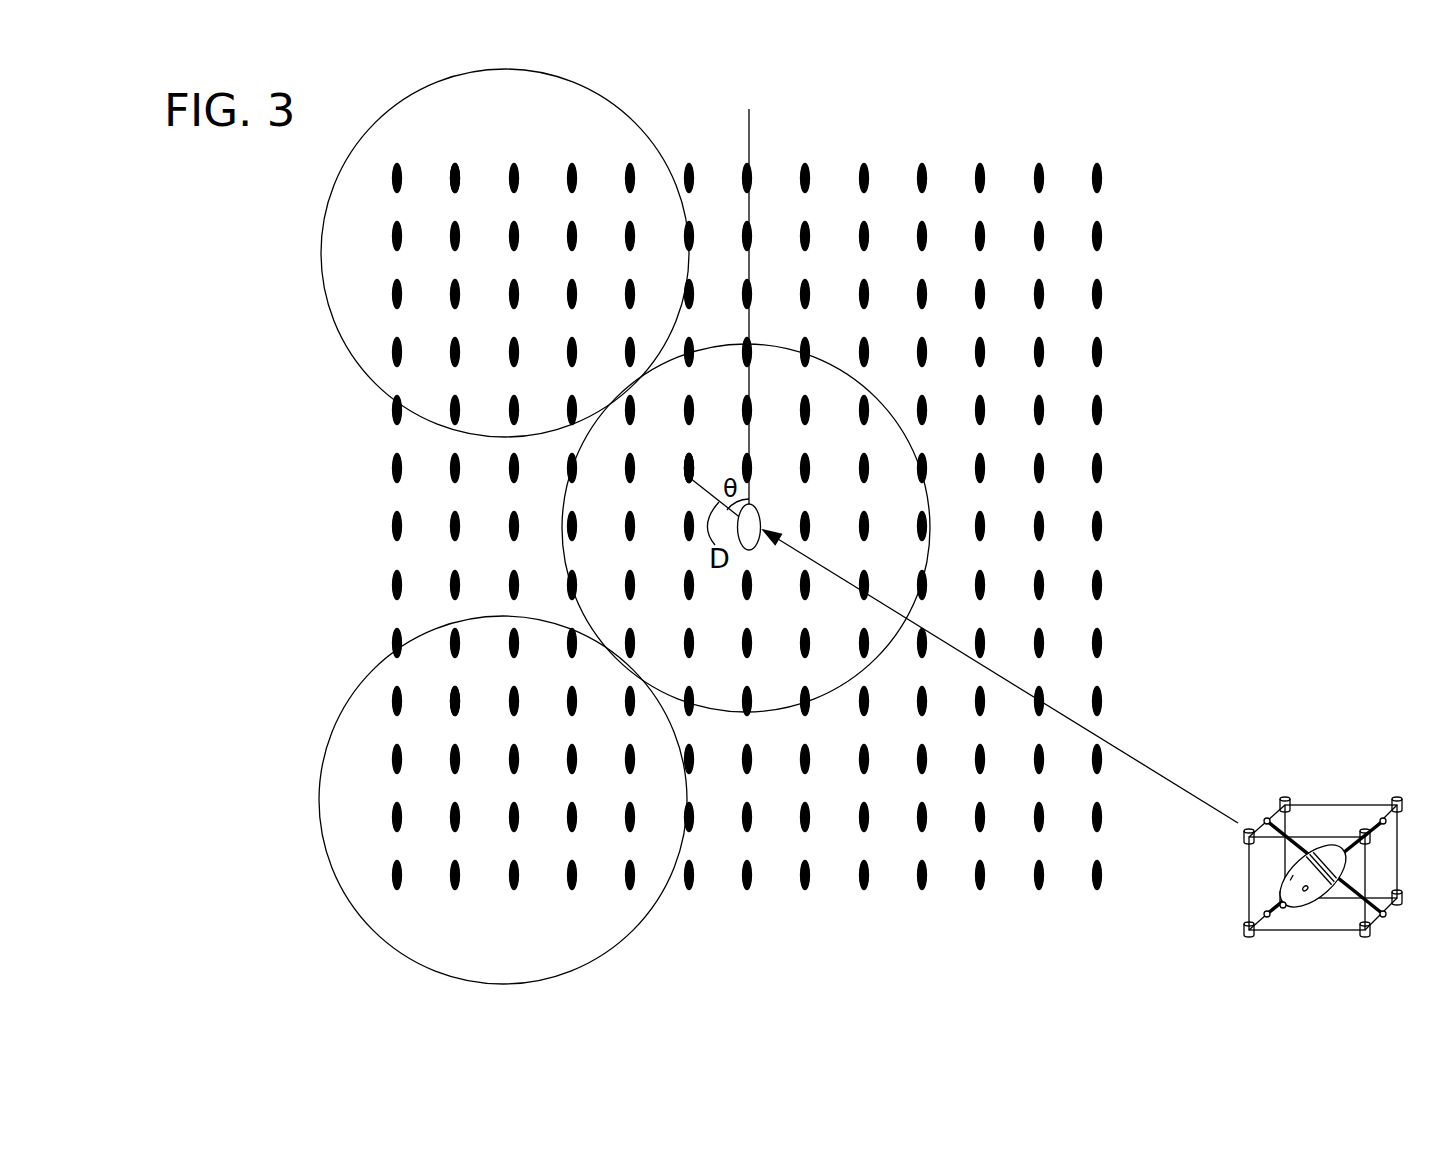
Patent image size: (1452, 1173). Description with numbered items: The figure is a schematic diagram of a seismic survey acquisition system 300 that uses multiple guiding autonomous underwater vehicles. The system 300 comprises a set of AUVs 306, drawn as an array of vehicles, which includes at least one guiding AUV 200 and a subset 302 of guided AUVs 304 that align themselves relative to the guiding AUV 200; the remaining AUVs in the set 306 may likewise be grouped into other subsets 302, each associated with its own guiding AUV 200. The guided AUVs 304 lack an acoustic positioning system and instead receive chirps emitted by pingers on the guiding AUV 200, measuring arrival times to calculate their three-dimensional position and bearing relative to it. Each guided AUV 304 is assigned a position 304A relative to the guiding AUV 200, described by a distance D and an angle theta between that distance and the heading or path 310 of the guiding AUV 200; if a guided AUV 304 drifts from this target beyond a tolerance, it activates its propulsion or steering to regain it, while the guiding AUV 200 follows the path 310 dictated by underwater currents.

The guiding AUV 200 is at (542, 276).
The acquisition system 300 is at (978, 95).
The subset of guided AUVs 302 is at (626, 110).
The guided AUV 304 is at (462, 176).
The position 304A is at (678, 492).
The set of AUVs 306 is at (1112, 228).
The path 310 is at (749, 116).